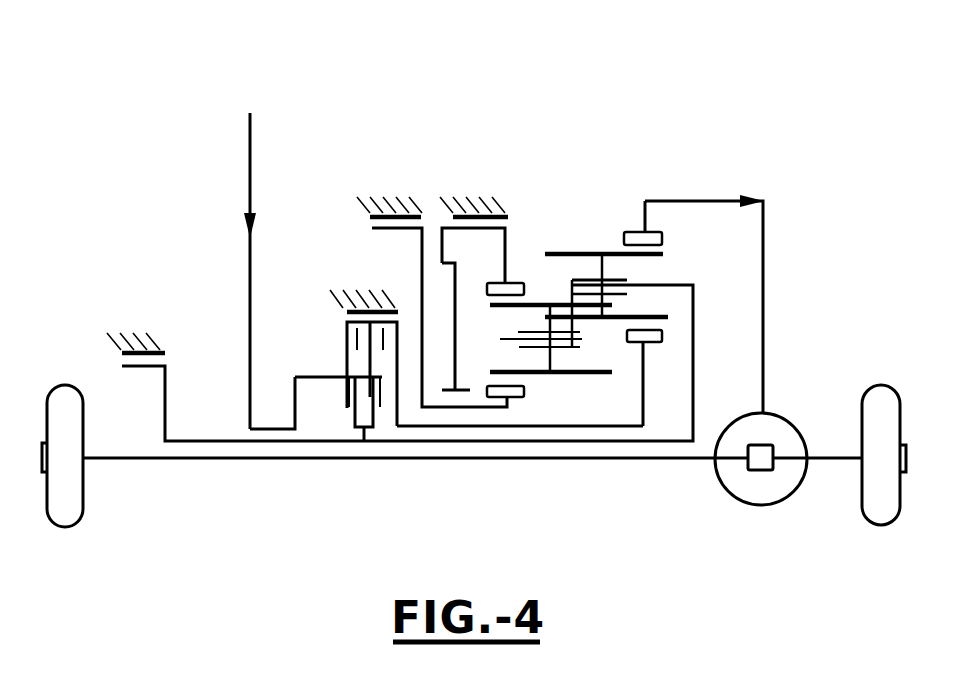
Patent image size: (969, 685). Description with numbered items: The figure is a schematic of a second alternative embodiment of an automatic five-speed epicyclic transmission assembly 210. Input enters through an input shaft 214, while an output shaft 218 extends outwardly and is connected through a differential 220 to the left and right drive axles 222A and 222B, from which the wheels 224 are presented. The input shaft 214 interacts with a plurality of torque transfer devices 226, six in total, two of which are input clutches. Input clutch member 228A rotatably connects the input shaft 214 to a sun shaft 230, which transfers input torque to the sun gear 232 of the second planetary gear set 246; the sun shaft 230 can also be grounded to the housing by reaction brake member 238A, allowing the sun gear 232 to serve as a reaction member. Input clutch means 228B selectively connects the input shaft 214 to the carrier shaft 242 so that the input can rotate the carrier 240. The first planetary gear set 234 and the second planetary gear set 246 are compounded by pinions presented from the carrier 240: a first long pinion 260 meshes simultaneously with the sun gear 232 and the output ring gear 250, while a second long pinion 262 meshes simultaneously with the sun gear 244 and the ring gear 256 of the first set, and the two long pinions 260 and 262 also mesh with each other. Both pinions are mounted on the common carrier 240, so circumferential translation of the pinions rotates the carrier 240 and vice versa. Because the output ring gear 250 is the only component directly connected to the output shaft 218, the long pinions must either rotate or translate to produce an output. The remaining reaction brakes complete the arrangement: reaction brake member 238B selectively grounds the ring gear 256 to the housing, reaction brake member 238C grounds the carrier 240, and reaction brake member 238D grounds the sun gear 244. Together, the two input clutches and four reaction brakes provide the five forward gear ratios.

The transmission assembly 210 is at (582, 180).
The input shaft 214 is at (250, 428).
The output shaft 218 is at (738, 196).
The differential 220 is at (765, 472).
The left drive axle 222A is at (168, 460).
The right drive axle 222B is at (835, 458).
The wheels 224 is at (80, 506).
The torque transfer devices 226 is at (351, 172).
The input clutch member 228A is at (347, 336).
The input clutch means 228B is at (331, 392).
The sun shaft 230 is at (352, 297).
The sun gear 232 is at (662, 336).
The first planetary gear set 234 is at (520, 236).
The reaction brake member 238A is at (348, 310).
The reaction brake member 238B is at (453, 215).
The reaction brake member 238C is at (161, 352).
The reaction brake member 238D is at (370, 216).
The carrier 240 is at (562, 347).
The carrier shaft 242 is at (514, 441).
The sun gear 244 is at (515, 398).
The second planetary gear set 246 is at (632, 208).
The output ring gear 250 is at (662, 238).
The ring gear 256 is at (487, 288).
The first long pinion 260 is at (552, 254).
The second long pinion 262 is at (580, 374).